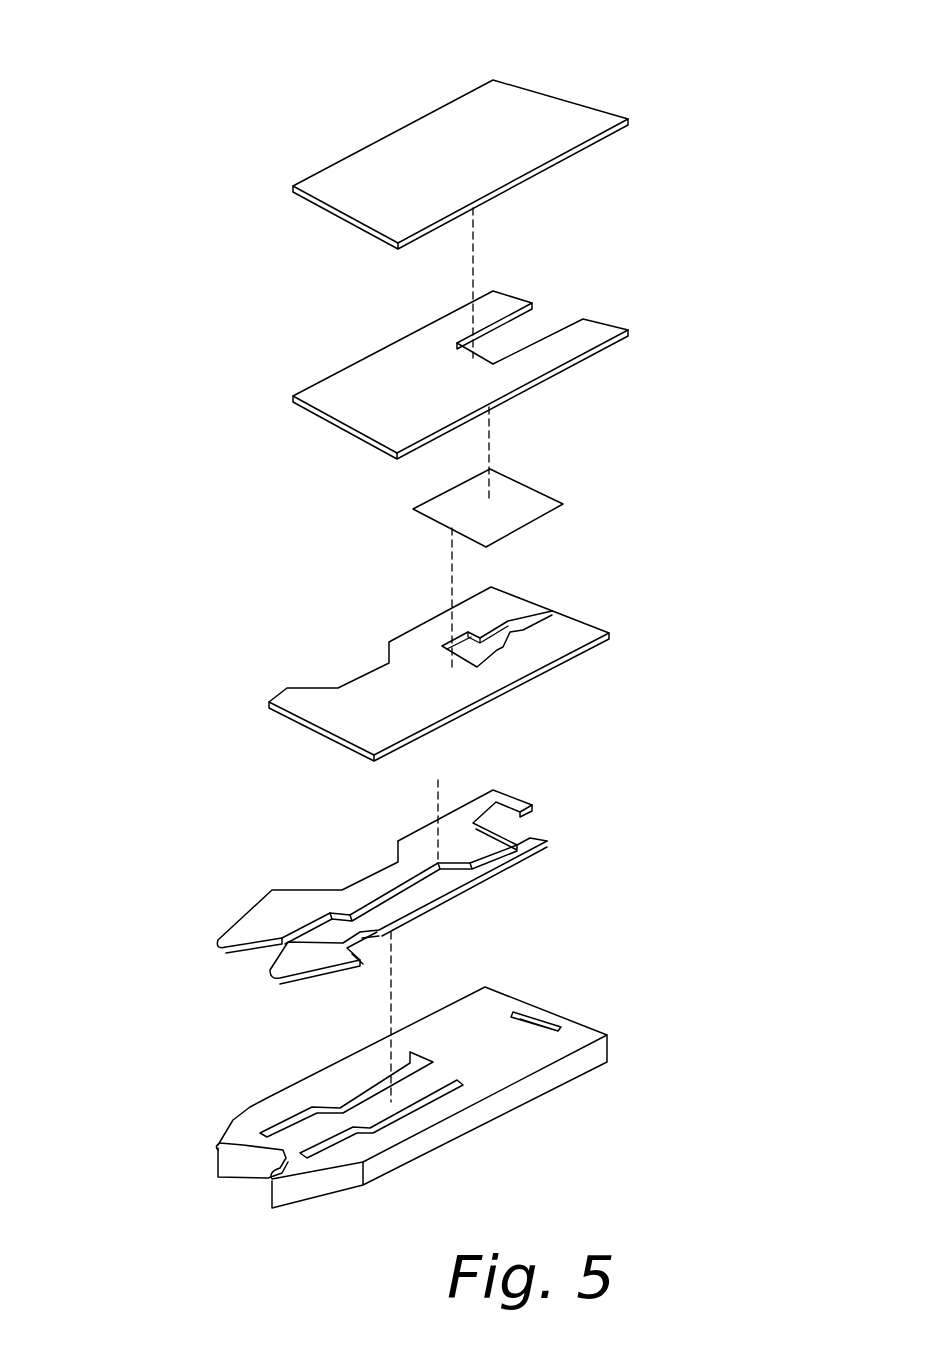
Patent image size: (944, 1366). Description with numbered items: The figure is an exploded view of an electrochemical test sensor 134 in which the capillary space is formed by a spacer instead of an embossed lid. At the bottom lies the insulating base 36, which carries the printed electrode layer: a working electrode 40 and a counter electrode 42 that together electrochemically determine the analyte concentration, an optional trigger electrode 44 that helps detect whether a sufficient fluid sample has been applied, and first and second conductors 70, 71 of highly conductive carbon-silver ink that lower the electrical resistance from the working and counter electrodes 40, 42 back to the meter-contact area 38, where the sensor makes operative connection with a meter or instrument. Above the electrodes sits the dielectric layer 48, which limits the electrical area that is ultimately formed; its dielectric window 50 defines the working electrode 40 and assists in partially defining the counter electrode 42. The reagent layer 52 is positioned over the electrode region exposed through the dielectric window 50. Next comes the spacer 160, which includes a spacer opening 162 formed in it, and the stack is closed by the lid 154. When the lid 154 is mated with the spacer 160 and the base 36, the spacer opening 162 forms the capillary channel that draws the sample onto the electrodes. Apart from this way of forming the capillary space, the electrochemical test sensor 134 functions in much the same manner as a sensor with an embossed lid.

The electrochemical test sensor 134 is at (106, 70).
The lid 154 is at (342, 128).
The spacer 160 is at (322, 353).
The spacer opening 162 is at (552, 316).
The reagent layer 52 is at (534, 476).
The dielectric layer 48 is at (608, 611).
The dielectric window 50 is at (517, 629).
The meter-contact area 38 is at (250, 960).
The working electrode 40 is at (510, 828).
The counter electrode 42 is at (478, 842).
The insulating base 36 is at (545, 1121).
The trigger electrode 44 is at (537, 1015).
The first conductor 70 is at (380, 1122).
The second conductor 71 is at (295, 1120).